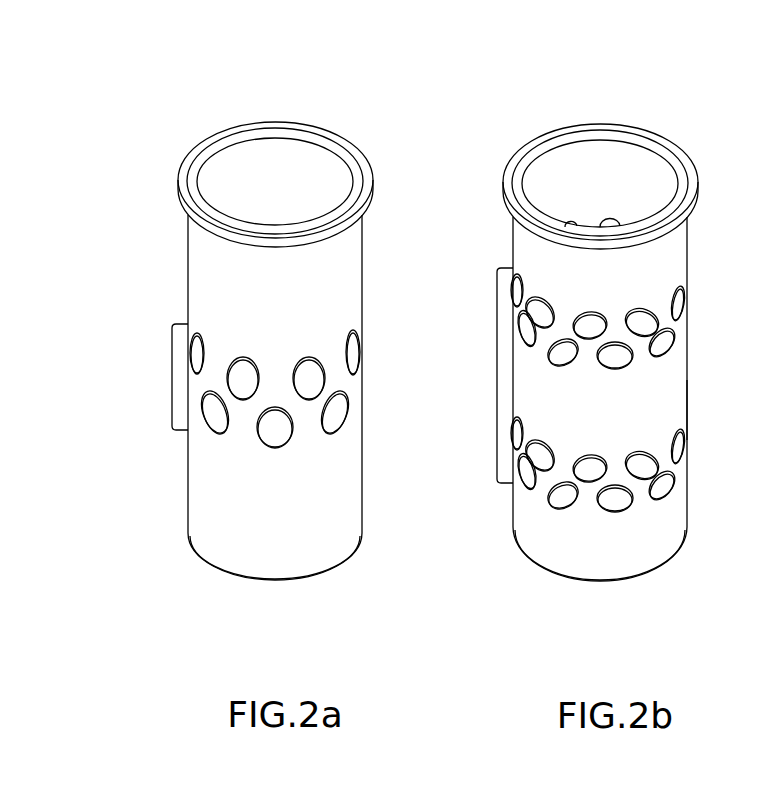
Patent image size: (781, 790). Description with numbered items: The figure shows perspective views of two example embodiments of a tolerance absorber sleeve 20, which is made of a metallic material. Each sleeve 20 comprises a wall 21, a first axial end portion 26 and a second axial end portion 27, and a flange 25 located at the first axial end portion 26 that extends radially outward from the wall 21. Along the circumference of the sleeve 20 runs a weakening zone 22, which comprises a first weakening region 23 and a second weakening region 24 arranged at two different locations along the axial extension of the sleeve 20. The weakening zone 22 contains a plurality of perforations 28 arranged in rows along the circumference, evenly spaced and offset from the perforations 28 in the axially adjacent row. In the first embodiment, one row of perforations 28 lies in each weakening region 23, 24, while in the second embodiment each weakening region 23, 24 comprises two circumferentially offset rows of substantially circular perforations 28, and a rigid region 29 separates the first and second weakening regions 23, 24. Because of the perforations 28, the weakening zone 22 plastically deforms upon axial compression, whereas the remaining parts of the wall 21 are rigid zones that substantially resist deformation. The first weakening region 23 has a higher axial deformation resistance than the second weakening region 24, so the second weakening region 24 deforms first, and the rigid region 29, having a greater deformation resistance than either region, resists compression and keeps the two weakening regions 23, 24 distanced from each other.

In FIG. 2A, the tolerance absorber sleeve 20 is at (297, 342).
In FIG. 2B, the tolerance absorber sleeve 20 is at (607, 342).
In FIG. 2A, the wall 21 is at (188, 240).
In FIG. 2B, the wall 21 is at (513, 240).
In FIG. 2A, the weakening zone 22 is at (172, 376).
In FIG. 2B, the weakening zone 22 is at (497, 376).
In FIG. 2A, the first weakening region 23 is at (364, 363).
In FIG. 2B, the first weakening region 23 is at (692, 303).
In FIG. 2A, the second weakening region 24 is at (364, 410).
In FIG. 2B, the second weakening region 24 is at (692, 460).
In FIG. 2A, the flange 25 is at (262, 122).
In FIG. 2B, the flange 25 is at (588, 123).
In FIG. 2A, the first axial end portion 26 is at (323, 128).
In FIG. 2B, the first axial end portion 26 is at (648, 128).
In FIG. 2A, the second axial end portion 27 is at (303, 579).
In FIG. 2B, the second axial end portion 27 is at (627, 582).
In FIG. 2A, the perforations 28 is at (217, 433).
In FIG. 2B, the perforations 28 is at (555, 506).
In FIG. 2B, the rigid region 29 is at (688, 382).